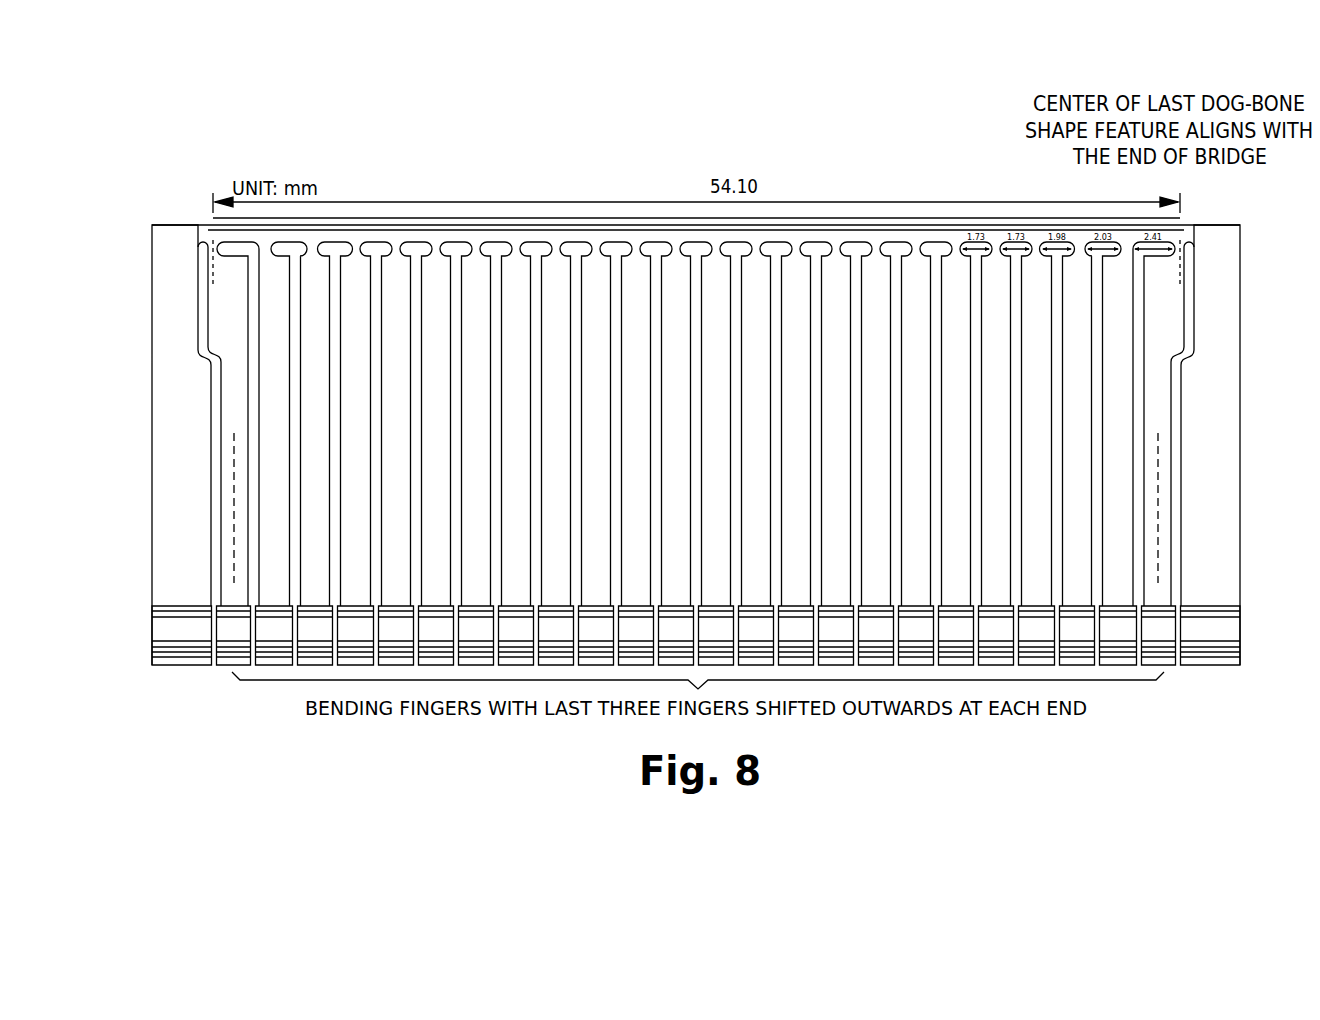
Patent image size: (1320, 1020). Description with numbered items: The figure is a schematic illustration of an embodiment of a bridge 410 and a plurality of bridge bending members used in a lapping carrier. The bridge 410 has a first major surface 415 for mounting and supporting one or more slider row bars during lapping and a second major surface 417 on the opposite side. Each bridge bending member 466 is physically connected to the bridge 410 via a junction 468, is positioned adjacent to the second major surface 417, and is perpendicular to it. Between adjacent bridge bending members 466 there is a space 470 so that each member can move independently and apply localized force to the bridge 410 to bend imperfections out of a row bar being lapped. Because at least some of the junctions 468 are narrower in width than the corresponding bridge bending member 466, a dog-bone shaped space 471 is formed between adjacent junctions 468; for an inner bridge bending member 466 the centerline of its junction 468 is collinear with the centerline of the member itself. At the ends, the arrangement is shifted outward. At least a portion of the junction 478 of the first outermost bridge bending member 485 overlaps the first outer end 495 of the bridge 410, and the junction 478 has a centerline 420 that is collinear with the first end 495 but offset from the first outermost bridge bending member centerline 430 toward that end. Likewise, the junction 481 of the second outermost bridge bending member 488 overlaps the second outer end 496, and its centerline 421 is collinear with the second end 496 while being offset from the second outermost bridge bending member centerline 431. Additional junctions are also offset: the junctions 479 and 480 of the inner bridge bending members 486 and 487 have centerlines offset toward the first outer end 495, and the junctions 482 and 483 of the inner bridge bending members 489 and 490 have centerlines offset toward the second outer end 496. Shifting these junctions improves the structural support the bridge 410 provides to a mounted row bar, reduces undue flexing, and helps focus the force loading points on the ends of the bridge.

The bridge 410 is at (762, 221).
The first major surface 415 is at (546, 222).
The second major surface 417 is at (577, 251).
The centerline of junction 478 420 is at (213, 260).
The centerline of junction 481 421 is at (1180, 262).
The first outermost bridge bending member centerline 430 is at (235, 522).
The second outermost bridge bending member centerline 431 is at (1158, 522).
The bridge bending member 466 is at (670, 302).
The junction 468 is at (675, 248).
The space 470 is at (418, 308).
The dog-bone shaped space 471 is at (407, 243).
The junction of first outermost bridge bending member 478 is at (226, 241).
The junction of inner bridge bending member 486 479 is at (279, 241).
The junction of inner bridge bending member 487 480 is at (326, 243).
The junction of second outermost bridge bending member 481 is at (1145, 248).
The junction of inner bridge bending member 489 482 is at (1096, 245).
The junction of inner bridge bending member 490 483 is at (1040, 244).
The first outermost bridge bending member 485 is at (224, 340).
The inner bridge bending member 486 is at (265, 375).
The inner bridge bending member 487 is at (320, 403).
The second outermost bridge bending member 488 is at (1172, 342).
The inner bridge bending member 489 is at (1128, 372).
The inner bridge bending member 490 is at (1072, 403).
The first outer end of the bridge 495 is at (216, 230).
The second outer end of the bridge 496 is at (1183, 226).